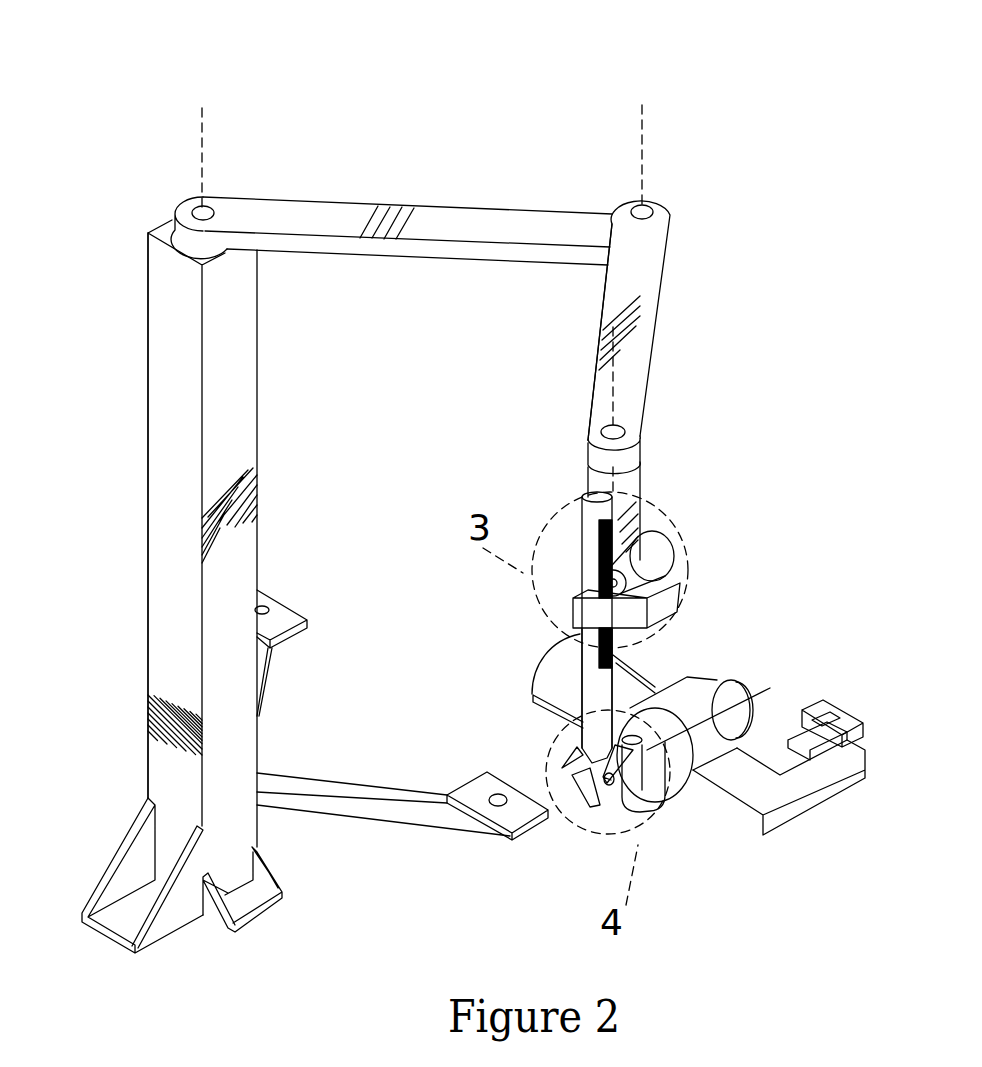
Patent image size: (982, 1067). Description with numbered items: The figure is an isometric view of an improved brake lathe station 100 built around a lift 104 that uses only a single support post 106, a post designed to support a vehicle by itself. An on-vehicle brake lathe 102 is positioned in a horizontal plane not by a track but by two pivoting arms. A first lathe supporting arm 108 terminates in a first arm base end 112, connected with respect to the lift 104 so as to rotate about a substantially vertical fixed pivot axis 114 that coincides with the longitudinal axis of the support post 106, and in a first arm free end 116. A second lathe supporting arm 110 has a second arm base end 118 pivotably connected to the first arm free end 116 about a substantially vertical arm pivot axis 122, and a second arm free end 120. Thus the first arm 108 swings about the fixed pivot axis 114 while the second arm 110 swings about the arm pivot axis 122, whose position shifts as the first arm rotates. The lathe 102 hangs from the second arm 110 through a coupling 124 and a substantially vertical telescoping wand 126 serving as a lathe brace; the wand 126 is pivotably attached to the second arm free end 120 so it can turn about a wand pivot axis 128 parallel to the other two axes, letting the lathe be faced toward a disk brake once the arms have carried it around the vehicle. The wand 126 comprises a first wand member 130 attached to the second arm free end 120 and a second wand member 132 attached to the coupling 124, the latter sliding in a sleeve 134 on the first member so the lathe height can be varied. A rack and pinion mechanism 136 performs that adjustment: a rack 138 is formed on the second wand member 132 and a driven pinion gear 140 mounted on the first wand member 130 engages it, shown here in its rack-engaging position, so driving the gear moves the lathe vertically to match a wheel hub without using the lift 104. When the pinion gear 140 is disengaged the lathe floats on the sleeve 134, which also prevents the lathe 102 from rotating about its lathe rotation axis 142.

The brake lathe station 100 is at (330, 88).
The on-vehicle brake lathe 102 is at (728, 830).
The lift 104 is at (143, 437).
The support post 106 is at (153, 622).
The first lathe supporting arm 108 is at (464, 192).
The second lathe supporting arm 110 is at (596, 354).
The first arm base end 112 is at (213, 205).
The fixed pivot axis 114 is at (200, 126).
The first arm free end 116 is at (670, 253).
The second arm base end 118 is at (645, 232).
The second arm free end 120 is at (596, 431).
The arm pivot axis 122 is at (642, 128).
The coupling 124 is at (581, 810).
The telescoping wand 126 is at (547, 596).
The wand pivot axis 128 is at (618, 380).
The first wand member 130 is at (645, 478).
The second wand member 132 is at (583, 690).
The sleeve 134 is at (578, 580).
The rack and pinion mechanism 136 is at (576, 599).
The rack 138 is at (623, 648).
The pinion gear 140 is at (606, 582).
The lathe rotation axis 142 is at (770, 688).